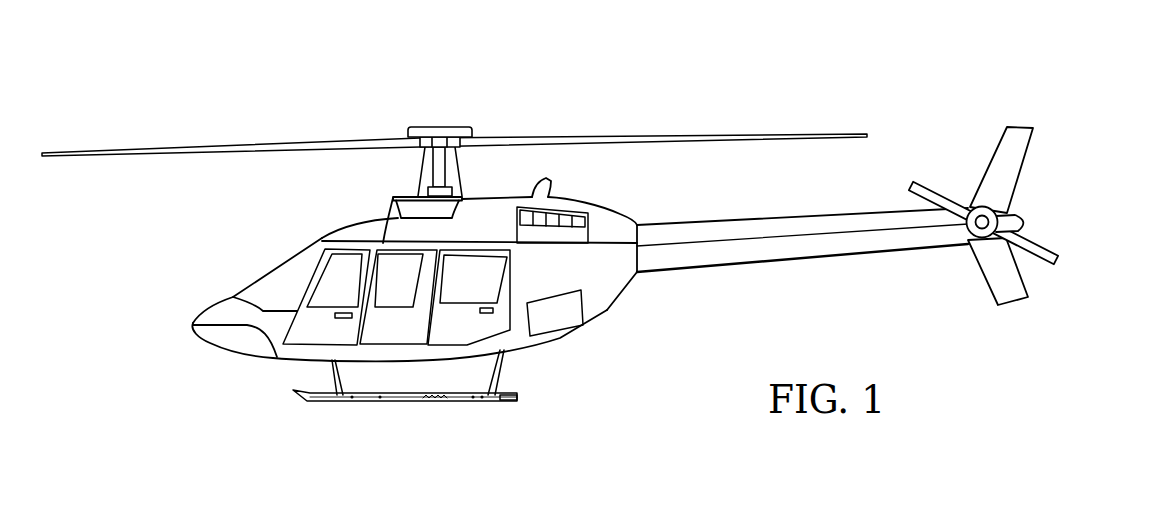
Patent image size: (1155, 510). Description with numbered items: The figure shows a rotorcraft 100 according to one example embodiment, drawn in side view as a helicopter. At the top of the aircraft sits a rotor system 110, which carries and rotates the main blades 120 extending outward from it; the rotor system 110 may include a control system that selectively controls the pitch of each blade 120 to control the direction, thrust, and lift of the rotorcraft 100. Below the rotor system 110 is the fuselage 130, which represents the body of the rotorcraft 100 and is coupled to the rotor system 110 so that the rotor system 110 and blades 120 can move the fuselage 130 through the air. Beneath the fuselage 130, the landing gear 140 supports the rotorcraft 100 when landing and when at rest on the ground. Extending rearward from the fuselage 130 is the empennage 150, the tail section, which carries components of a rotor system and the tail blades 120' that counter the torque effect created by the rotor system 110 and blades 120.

The rotorcraft 100 is at (292, 88).
The rotor system 110 is at (443, 125).
The blades 120 is at (454, 115).
The blades 120' is at (1024, 216).
The fuselage 130 is at (233, 355).
The landing gear 140 is at (382, 403).
The empennage 150 is at (717, 270).